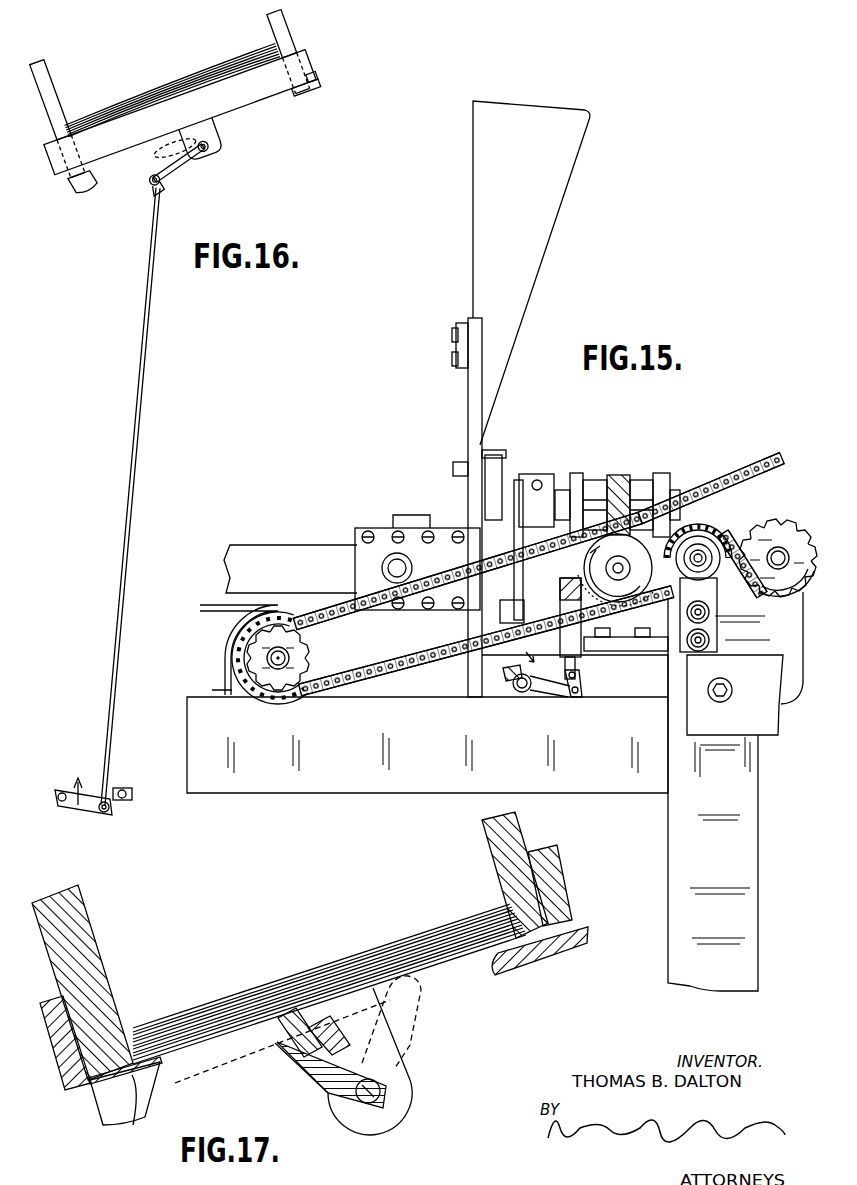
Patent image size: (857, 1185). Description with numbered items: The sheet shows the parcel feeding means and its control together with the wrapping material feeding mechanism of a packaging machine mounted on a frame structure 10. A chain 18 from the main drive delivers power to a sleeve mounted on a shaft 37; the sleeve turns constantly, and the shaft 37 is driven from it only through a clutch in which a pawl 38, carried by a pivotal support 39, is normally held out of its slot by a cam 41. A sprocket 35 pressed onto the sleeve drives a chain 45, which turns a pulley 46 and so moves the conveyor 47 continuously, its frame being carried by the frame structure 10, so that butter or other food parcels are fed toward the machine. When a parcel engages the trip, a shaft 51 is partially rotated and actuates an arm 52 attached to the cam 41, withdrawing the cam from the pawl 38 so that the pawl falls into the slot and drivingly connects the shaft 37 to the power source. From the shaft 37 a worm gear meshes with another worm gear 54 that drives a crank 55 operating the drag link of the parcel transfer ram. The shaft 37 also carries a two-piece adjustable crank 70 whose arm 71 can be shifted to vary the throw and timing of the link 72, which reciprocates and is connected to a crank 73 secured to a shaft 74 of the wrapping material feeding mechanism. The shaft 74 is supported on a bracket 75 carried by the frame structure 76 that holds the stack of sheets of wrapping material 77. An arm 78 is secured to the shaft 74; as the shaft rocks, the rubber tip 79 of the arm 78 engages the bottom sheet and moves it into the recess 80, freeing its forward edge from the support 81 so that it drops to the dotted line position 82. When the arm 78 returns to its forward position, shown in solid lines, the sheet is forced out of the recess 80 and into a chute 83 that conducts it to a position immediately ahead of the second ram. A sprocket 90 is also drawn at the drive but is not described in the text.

In FIG. 15, the frame structure 10 is at (757, 928).
In FIG. 15, the chain 18 is at (739, 477).
In FIG. 15, the sprocket 35 is at (288, 680).
In FIG. 16, the shaft 37 is at (125, 790).
In FIG. 15, the shaft 37 is at (616, 570).
In FIG. 15, the pawl 38 is at (585, 553).
In FIG. 15, the pivotal support 39 is at (525, 551).
In FIG. 15, the cam 41 is at (560, 605).
In FIG. 15, the chain 45 is at (428, 660).
In FIG. 15, the pulley 46 is at (232, 660).
In FIG. 15, the conveyor 47 is at (210, 626).
In FIG. 15, the shaft 51 is at (521, 697).
In FIG. 15, the arm 52 is at (550, 690).
In FIG. 15, the worm gear 54 is at (621, 478).
In FIG. 15, the crank 55 is at (530, 472).
In FIG. 16, the two-piece adjustable crank 70 is at (92, 790).
In FIG. 16, the arm 71 is at (90, 808).
In FIG. 16, the link 72 is at (138, 447).
In FIG. 16, the crank 73 is at (181, 171).
In FIG. 16, the shaft 74 is at (208, 152).
In FIG. 17, the shaft 74 is at (380, 1089).
In FIG. 16, the bracket 75 is at (213, 134).
In FIG. 17, the bracket 75 is at (385, 1043).
In FIG. 16, the frame structure 76 is at (275, 74).
In FIG. 17, the frame structure 76 is at (568, 887).
In FIG. 16, the stack of sheets of wrapping material 77 is at (138, 97).
In FIG. 17, the stack of sheets of wrapping material 77 is at (231, 993).
In FIG. 17, the arm 78 is at (310, 1072).
In FIG. 17, the tip 79 is at (276, 1035).
In FIG. 17, the recess 80 is at (551, 958).
In FIG. 17, the support 81 is at (143, 1095).
In FIG. 17, the dotted line position 82 is at (190, 1083).
In FIG. 15, the chute 83 is at (558, 183).
In FIG. 15, the drive sprocket 90 is at (760, 466).